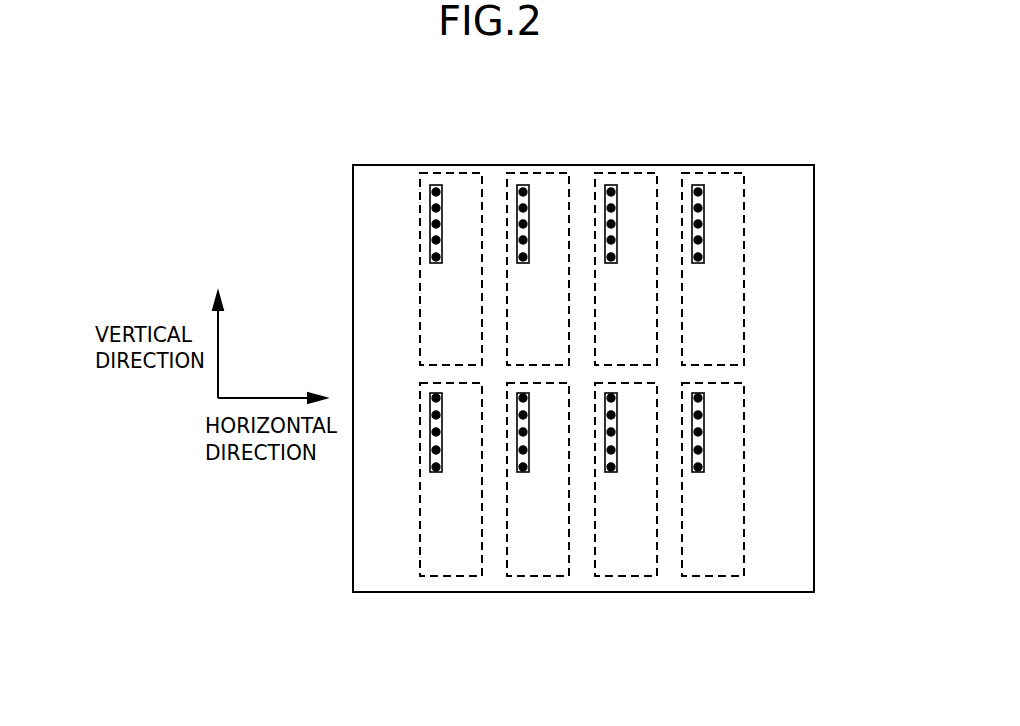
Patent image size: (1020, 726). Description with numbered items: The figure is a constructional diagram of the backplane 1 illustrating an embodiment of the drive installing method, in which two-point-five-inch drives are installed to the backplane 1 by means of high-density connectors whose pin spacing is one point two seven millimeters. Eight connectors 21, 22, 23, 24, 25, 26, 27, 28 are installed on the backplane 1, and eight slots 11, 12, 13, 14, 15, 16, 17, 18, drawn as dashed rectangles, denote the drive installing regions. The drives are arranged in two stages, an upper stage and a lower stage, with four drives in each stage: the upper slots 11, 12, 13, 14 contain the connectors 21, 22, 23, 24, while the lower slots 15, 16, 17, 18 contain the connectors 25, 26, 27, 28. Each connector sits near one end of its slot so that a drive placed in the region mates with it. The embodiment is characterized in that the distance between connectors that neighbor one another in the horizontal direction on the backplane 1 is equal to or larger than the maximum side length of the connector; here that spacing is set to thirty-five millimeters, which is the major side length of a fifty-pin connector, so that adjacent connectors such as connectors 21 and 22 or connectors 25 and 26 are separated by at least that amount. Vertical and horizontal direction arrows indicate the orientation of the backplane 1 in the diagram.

The backplane 1 is at (814, 453).
The slot 11 is at (482, 273).
The slot 12 is at (569, 273).
The slot 13 is at (657, 273).
The slot 14 is at (744, 273).
The slot 15 is at (440, 592).
The slot 16 is at (527, 592).
The slot 17 is at (615, 592).
The slot 18 is at (702, 592).
The connector 21 is at (437, 187).
The connector 22 is at (524, 187).
The connector 23 is at (612, 187).
The connector 24 is at (699, 187).
The connector 25 is at (438, 473).
The connector 26 is at (525, 473).
The connector 27 is at (613, 473).
The connector 28 is at (700, 473).